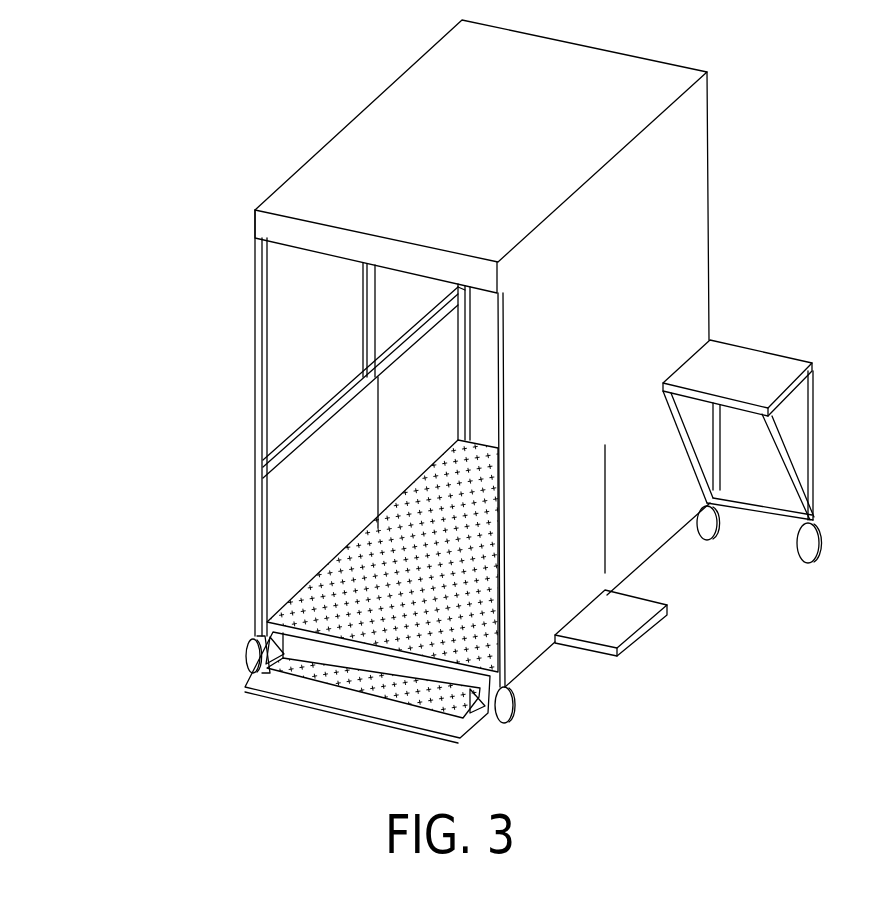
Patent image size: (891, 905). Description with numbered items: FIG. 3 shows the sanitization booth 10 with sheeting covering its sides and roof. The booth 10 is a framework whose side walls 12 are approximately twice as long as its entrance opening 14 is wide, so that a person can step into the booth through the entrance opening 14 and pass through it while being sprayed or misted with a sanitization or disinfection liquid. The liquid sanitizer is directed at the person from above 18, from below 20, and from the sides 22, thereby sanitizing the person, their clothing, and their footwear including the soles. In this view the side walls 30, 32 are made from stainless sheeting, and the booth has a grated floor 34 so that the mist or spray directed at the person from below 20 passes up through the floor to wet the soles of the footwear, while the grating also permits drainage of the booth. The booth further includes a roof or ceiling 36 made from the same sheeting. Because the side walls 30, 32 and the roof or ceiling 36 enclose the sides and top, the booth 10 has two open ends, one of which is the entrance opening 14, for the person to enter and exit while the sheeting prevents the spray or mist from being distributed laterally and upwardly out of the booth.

The sanitization booth 10 is at (506, 407).
The side walls 12 is at (290, 392).
The entrance opening 14 is at (325, 507).
The above 18 is at (471, 156).
The below 20 is at (321, 603).
The sides 22 is at (385, 419).
The side wall 30 is at (604, 379).
The side wall 32 is at (375, 351).
The grated floor 34 is at (471, 648).
The roof or ceiling 36 is at (262, 53).